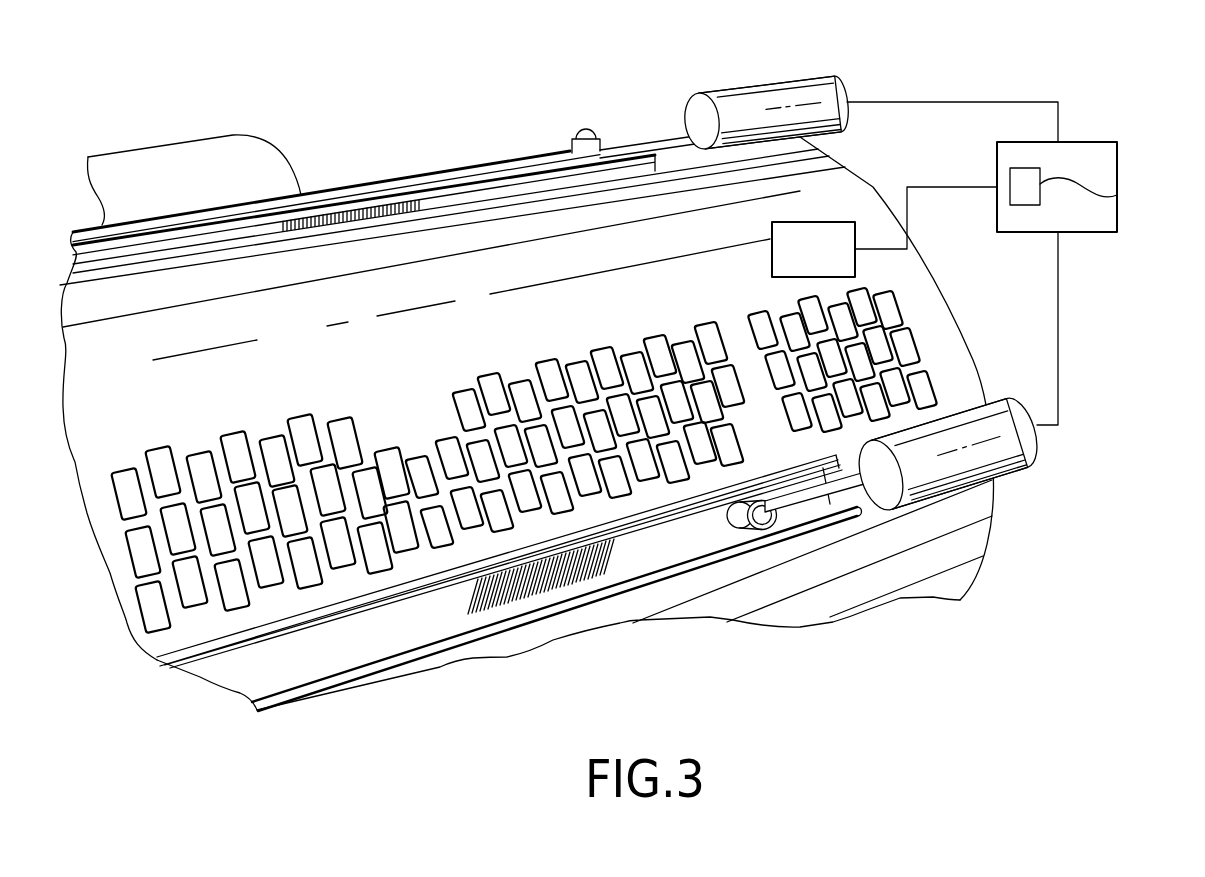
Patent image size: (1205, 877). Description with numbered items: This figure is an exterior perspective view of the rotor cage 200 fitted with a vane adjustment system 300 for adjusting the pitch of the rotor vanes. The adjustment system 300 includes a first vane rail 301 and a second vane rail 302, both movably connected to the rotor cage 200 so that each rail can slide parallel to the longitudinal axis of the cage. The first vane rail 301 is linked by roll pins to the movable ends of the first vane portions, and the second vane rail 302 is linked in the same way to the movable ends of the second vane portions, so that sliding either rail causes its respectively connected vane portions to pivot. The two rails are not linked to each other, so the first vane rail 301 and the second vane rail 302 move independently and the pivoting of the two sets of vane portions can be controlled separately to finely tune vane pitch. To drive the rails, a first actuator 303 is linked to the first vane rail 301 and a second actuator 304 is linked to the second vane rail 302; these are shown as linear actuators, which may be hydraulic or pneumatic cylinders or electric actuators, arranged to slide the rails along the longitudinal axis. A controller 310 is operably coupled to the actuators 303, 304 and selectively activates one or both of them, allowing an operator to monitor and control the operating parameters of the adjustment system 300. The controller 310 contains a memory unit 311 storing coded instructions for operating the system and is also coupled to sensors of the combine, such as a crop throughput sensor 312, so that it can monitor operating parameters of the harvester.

The rotor cage 200 is at (947, 351).
The vane adjustment system 300 is at (583, 362).
The first vane rail 301 is at (690, 568).
The second vane rail 302 is at (432, 175).
The first actuator 303 is at (1003, 457).
The second actuator 304 is at (775, 93).
The controller 310 is at (1018, 244).
The memory unit 311 is at (1117, 195).
The crop throughput sensor 312 is at (848, 221).